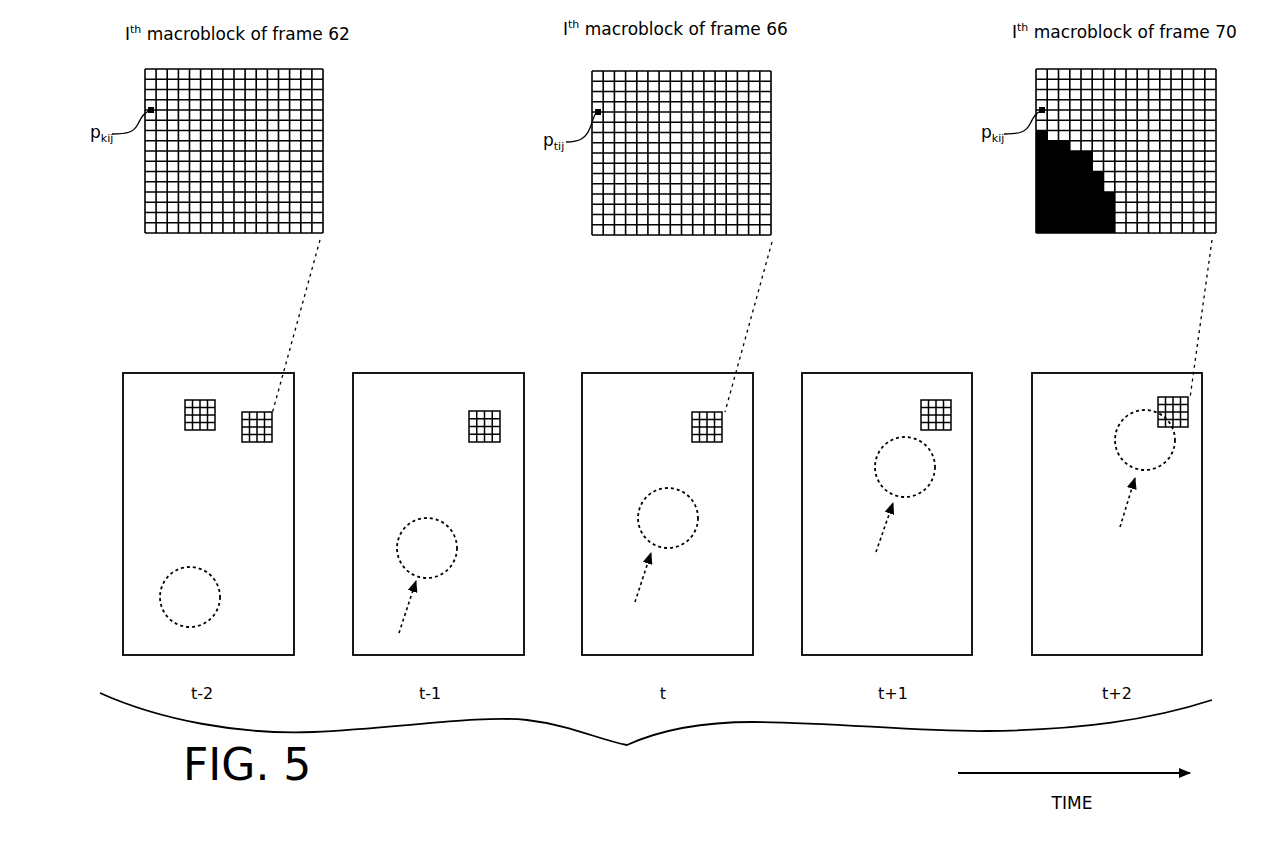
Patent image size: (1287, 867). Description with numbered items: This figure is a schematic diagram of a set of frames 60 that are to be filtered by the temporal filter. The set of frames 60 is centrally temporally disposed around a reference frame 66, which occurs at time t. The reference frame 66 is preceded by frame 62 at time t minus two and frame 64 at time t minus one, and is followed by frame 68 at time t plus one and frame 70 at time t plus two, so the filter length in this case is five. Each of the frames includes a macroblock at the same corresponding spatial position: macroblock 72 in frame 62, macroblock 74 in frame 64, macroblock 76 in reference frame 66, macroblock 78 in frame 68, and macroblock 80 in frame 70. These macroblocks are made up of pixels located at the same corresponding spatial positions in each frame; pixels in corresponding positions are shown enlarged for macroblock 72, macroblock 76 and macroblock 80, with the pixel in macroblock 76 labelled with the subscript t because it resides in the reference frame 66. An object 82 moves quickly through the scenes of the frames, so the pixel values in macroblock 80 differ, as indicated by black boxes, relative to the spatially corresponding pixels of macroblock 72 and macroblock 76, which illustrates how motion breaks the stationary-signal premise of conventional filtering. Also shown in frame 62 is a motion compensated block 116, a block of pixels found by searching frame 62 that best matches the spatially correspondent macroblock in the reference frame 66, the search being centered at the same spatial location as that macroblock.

The set of frames 60 is at (627, 745).
The frame 62 is at (143, 373).
The frame 64 is at (383, 373).
The reference frame 66 is at (619, 373).
The frame 68 is at (837, 373).
The frame 70 is at (1068, 373).
The macroblock 72 is at (325, 153).
The macroblock 74 is at (500, 424).
The macroblock 76 is at (773, 128).
The macroblock 78 is at (951, 412).
The macroblock 80 is at (1218, 136).
The object 82 is at (160, 600).
The motion compensated block 116 is at (185, 416).